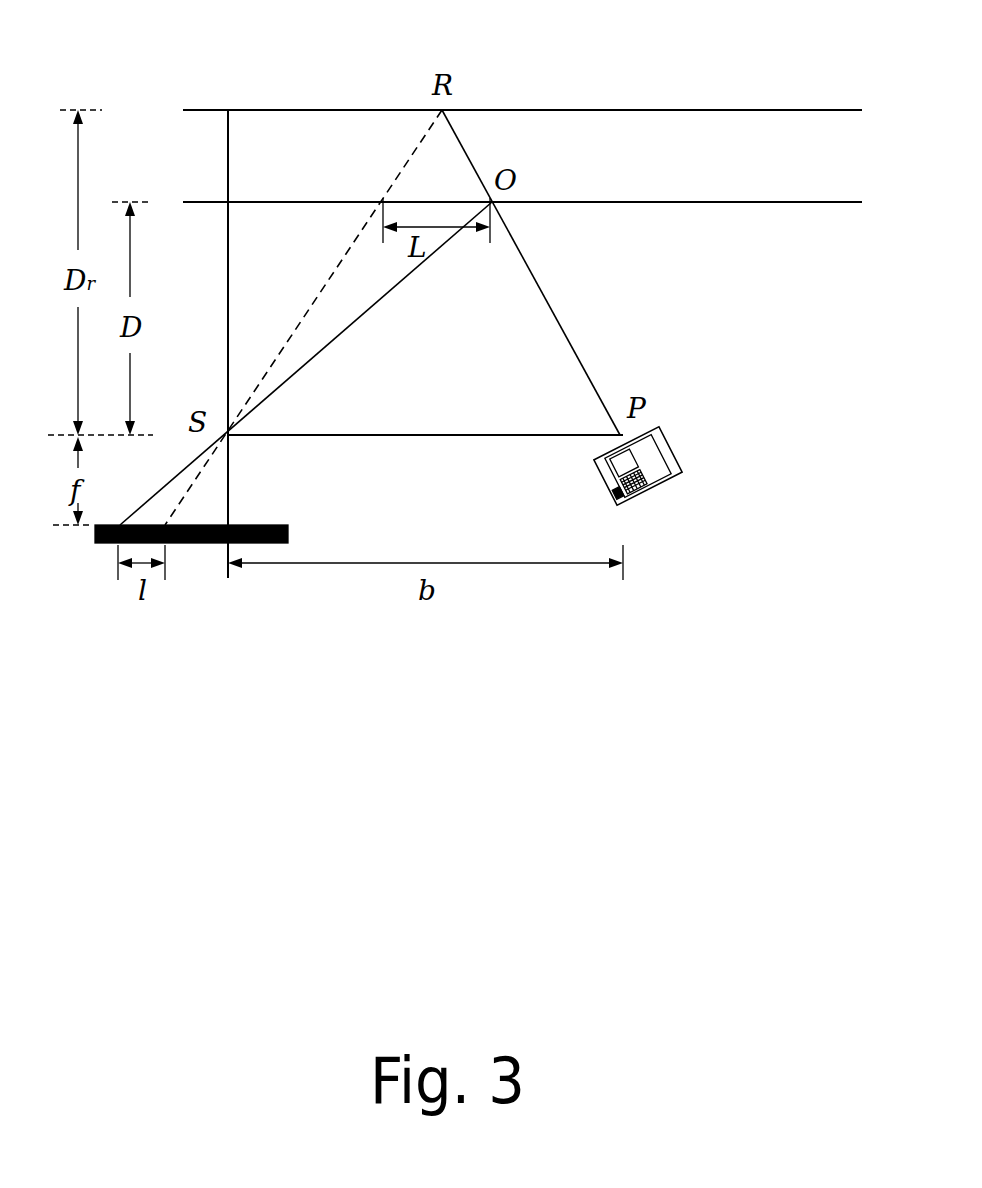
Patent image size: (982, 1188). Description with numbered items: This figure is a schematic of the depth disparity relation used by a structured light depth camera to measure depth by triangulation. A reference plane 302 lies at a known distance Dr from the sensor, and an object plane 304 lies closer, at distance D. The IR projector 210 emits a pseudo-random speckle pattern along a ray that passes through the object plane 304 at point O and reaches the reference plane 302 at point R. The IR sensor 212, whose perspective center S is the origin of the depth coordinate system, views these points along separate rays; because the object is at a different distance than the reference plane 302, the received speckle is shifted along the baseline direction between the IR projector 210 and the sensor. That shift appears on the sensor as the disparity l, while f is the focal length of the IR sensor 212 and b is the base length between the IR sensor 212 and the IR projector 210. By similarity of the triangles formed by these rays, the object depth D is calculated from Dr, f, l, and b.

The reference plane 302 is at (515, 100).
The object plane 304 is at (560, 194).
The IR projector 210 is at (685, 489).
The IR sensor 212 is at (207, 553).